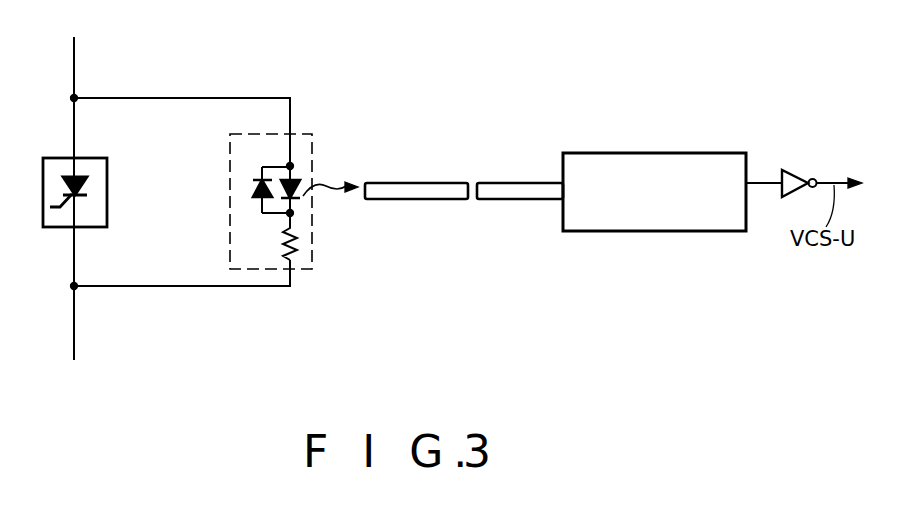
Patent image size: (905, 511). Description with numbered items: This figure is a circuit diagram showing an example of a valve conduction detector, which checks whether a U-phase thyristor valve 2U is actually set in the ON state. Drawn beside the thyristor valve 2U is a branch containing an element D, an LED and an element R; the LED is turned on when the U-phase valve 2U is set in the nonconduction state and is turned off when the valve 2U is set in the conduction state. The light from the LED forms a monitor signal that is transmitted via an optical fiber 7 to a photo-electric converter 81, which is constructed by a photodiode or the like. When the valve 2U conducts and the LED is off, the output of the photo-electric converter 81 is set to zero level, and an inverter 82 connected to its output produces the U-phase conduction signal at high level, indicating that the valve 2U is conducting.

The thyristor valve 2U is at (107, 203).
The diode D is at (250, 190).
The element LED is at (296, 180).
The resistor R is at (282, 245).
The optical fiber 7 is at (400, 240).
The photo-electric converter 81 is at (686, 155).
The inverter 82 is at (791, 171).